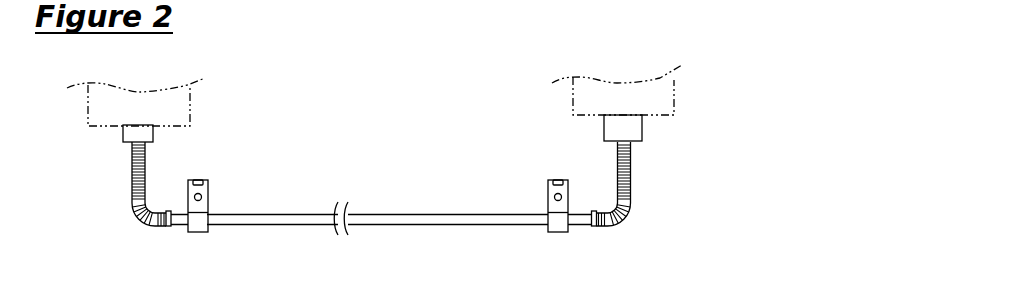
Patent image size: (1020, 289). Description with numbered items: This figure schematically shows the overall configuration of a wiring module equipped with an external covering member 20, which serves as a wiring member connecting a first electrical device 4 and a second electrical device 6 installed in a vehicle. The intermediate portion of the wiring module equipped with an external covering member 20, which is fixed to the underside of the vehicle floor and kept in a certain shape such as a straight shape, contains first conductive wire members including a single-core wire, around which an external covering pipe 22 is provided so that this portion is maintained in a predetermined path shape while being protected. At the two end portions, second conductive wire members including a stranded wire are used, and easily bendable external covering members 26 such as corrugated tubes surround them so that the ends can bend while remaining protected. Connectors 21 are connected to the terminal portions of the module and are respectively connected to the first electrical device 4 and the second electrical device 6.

The first electrical device 4 is at (192, 107).
The second electrical device 6 is at (674, 92).
The wiring module equipped with an external covering member 20 is at (397, 106).
The connector 21 is at (153, 135).
The external covering pipe 22 is at (417, 225).
The external covering member 26 is at (131, 173).